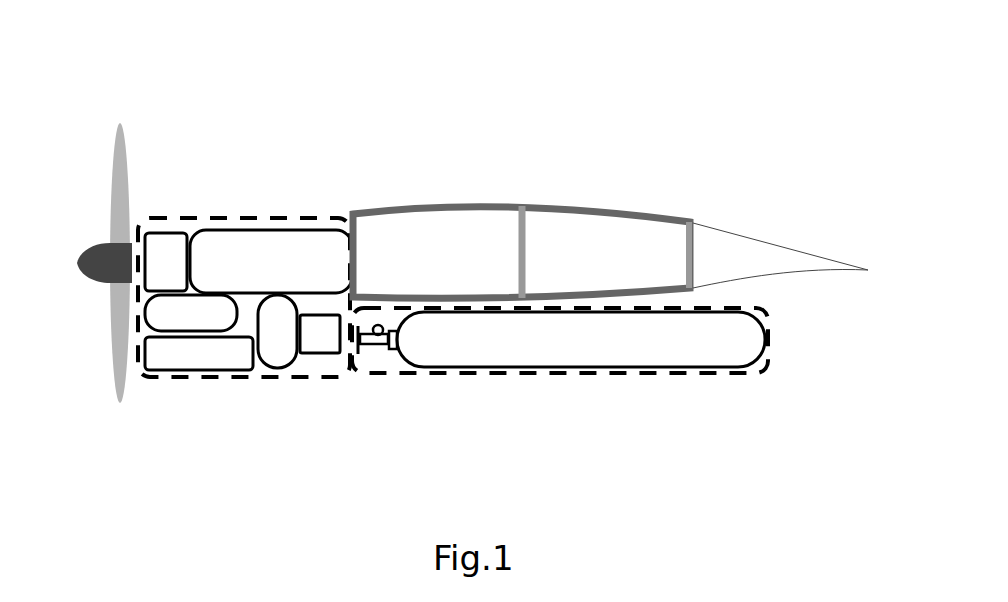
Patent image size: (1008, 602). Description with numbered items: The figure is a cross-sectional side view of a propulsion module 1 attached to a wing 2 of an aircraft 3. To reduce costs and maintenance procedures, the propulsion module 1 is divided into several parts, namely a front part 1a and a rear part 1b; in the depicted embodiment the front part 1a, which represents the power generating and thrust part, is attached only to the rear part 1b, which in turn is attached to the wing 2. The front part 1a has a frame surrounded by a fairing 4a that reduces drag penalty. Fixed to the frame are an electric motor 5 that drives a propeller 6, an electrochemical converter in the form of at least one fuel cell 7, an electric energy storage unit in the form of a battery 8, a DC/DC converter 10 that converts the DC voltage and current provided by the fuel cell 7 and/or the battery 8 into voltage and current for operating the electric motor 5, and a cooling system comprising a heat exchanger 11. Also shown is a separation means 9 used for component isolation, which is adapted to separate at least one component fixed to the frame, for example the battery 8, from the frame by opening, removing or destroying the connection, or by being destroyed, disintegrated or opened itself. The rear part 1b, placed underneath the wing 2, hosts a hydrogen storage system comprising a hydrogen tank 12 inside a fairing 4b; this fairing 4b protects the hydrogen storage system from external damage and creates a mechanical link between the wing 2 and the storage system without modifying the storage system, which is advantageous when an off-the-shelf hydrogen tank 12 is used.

The propulsion module 1 is at (410, 264).
The front part 1a is at (248, 110).
The rear part 1b is at (630, 418).
The wing 2 is at (467, 204).
The aircraft 3 is at (578, 115).
The fairing 4a is at (287, 217).
The fairing 4b is at (487, 375).
The electric motor 5 is at (167, 233).
The propeller 6 is at (110, 158).
The fuel cell 7 is at (240, 229).
The battery 8 is at (275, 370).
The separation means 9 is at (325, 370).
The DC/DC converter 10 is at (142, 312).
The heat exchanger 11 is at (212, 378).
The hydrogen tank 12 is at (718, 369).